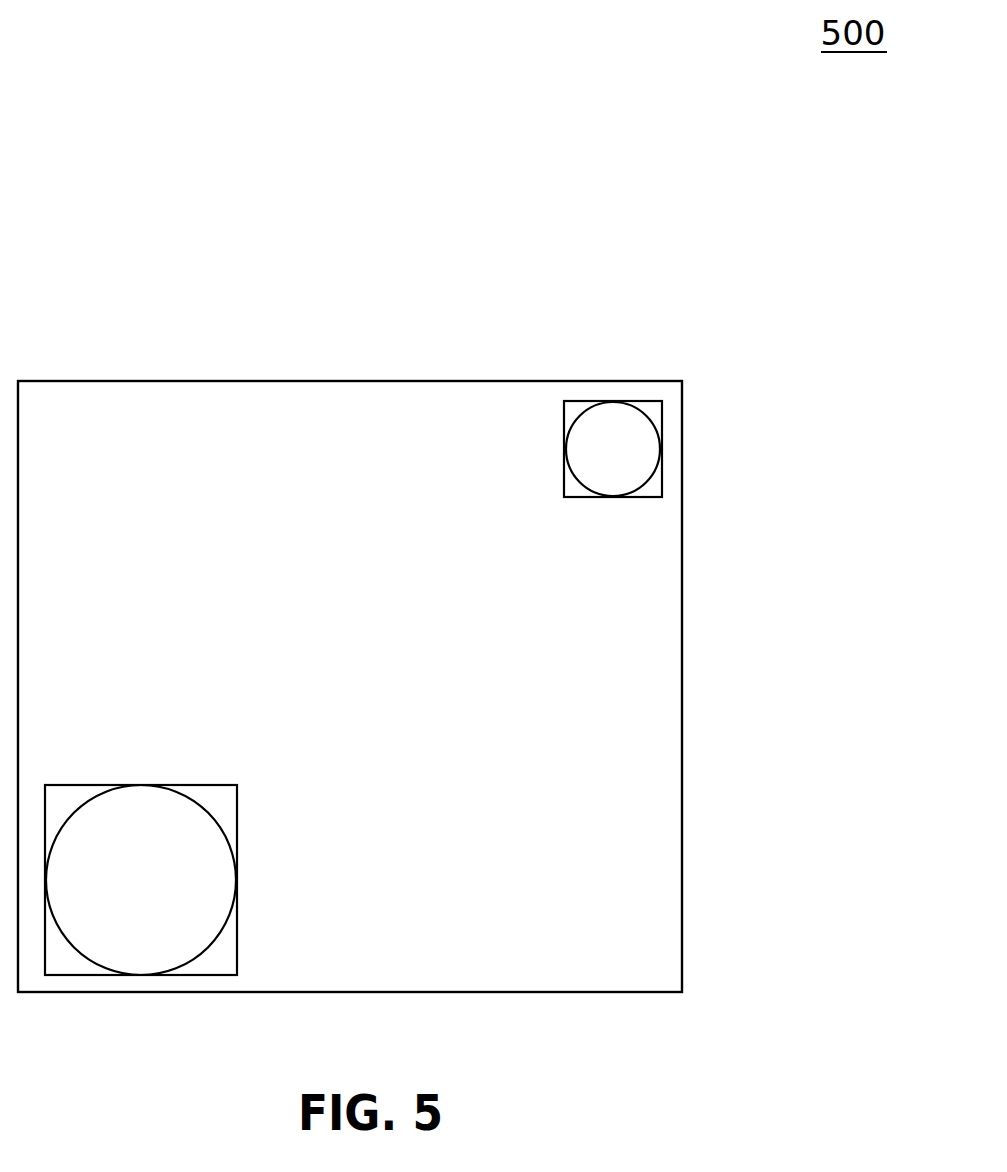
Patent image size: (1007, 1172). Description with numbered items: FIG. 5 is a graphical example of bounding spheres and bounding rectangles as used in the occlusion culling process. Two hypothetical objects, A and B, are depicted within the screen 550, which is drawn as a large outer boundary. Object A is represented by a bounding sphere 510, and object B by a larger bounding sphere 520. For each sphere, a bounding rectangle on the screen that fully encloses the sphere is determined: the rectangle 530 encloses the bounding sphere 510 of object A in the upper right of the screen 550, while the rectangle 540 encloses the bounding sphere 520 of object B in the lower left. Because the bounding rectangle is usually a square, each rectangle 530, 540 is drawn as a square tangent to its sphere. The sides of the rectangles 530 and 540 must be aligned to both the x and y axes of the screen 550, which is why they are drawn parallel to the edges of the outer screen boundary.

The bounding sphere 510 is at (652, 449).
The bounding sphere 520 is at (206, 951).
The rectangle 530 is at (582, 401).
The rectangle 540 is at (226, 785).
The screen 550 is at (681, 686).